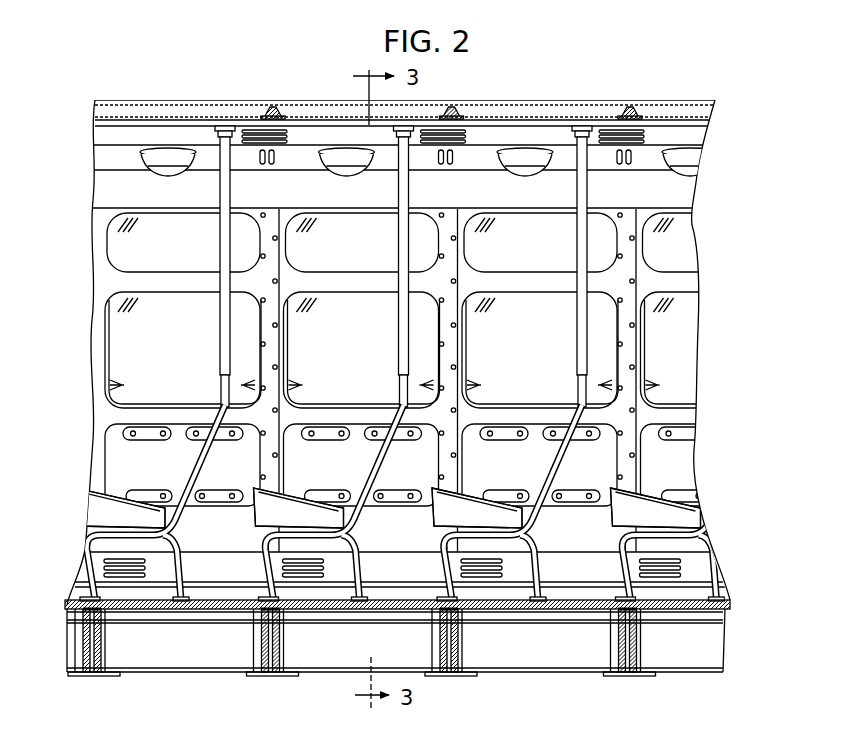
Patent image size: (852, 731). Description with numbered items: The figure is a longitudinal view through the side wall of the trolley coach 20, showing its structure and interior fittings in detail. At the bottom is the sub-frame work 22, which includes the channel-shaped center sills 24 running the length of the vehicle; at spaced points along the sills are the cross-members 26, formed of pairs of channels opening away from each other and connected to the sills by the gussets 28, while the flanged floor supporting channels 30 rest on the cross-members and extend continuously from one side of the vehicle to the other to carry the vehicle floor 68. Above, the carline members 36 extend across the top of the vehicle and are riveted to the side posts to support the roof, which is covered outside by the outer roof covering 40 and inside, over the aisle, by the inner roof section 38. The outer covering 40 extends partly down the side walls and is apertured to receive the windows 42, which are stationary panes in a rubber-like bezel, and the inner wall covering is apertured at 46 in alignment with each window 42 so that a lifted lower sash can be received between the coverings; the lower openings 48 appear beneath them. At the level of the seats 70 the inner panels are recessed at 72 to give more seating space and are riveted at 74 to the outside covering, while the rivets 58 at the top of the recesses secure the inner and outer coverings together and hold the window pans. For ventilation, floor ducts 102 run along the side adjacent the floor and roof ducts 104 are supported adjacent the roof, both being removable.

The trolley coach 20 is at (706, 213).
The sub-frame work 22 is at (560, 682).
The center sills 24 is at (678, 658).
The cross-members 26 is at (80, 648).
The gussets 28 is at (103, 677).
The floor supporting channels 30 is at (258, 613).
The carline member 36 is at (283, 109).
The inner roof section 38 is at (167, 118).
The outer roof covering 40 is at (224, 100).
The windows 42 is at (182, 258).
The inner covering aperture 46 is at (181, 270).
The lower window panels 48 is at (186, 359).
The rivets 58 is at (163, 437).
The vehicle floor 68 is at (375, 612).
The seats 70 is at (258, 514).
The recesses 72 is at (178, 438).
The rivets 74 is at (341, 494).
The floor ducts 102 is at (597, 560).
The roof ducts 104 is at (108, 186).